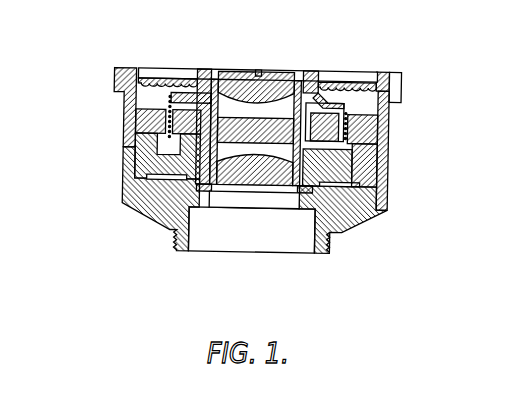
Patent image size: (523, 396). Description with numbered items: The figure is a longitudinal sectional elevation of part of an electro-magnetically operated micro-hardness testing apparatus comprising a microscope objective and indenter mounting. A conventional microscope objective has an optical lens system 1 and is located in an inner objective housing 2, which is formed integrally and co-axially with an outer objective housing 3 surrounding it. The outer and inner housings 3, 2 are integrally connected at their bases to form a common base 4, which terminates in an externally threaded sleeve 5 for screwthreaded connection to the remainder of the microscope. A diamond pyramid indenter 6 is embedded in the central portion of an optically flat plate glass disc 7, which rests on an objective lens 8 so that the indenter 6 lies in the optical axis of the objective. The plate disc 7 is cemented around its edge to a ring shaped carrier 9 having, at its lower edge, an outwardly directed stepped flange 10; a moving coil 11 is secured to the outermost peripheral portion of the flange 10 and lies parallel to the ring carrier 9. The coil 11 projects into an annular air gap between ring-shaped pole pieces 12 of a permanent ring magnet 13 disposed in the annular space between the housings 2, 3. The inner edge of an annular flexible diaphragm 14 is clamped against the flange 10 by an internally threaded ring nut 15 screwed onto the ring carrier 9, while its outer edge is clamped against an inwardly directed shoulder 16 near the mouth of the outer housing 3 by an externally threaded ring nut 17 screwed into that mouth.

The optical lens system 1 is at (266, 135).
The inner objective housing 2 is at (192, 169).
The outer objective housing 3 is at (132, 150).
The common base 4 is at (136, 207).
The externally threaded sleeve 5 is at (333, 236).
The diamond pyramid indenter 6 is at (256, 70).
The plate glass disc 7 is at (226, 70).
The objective lens 8 is at (264, 105).
The ring shaped carrier 9 is at (210, 72).
The stepped flange 10 is at (321, 99).
The moving coil 11 is at (377, 120).
The pole pieces 12 is at (129, 122).
The permanent ring magnet 13 is at (380, 159).
The annular flexible diaphragm 14 is at (142, 82).
The internally threaded ring nut 15 is at (310, 77).
The inwardly directed shoulder 16 is at (112, 90).
The externally threaded ring nut 17 is at (381, 73).